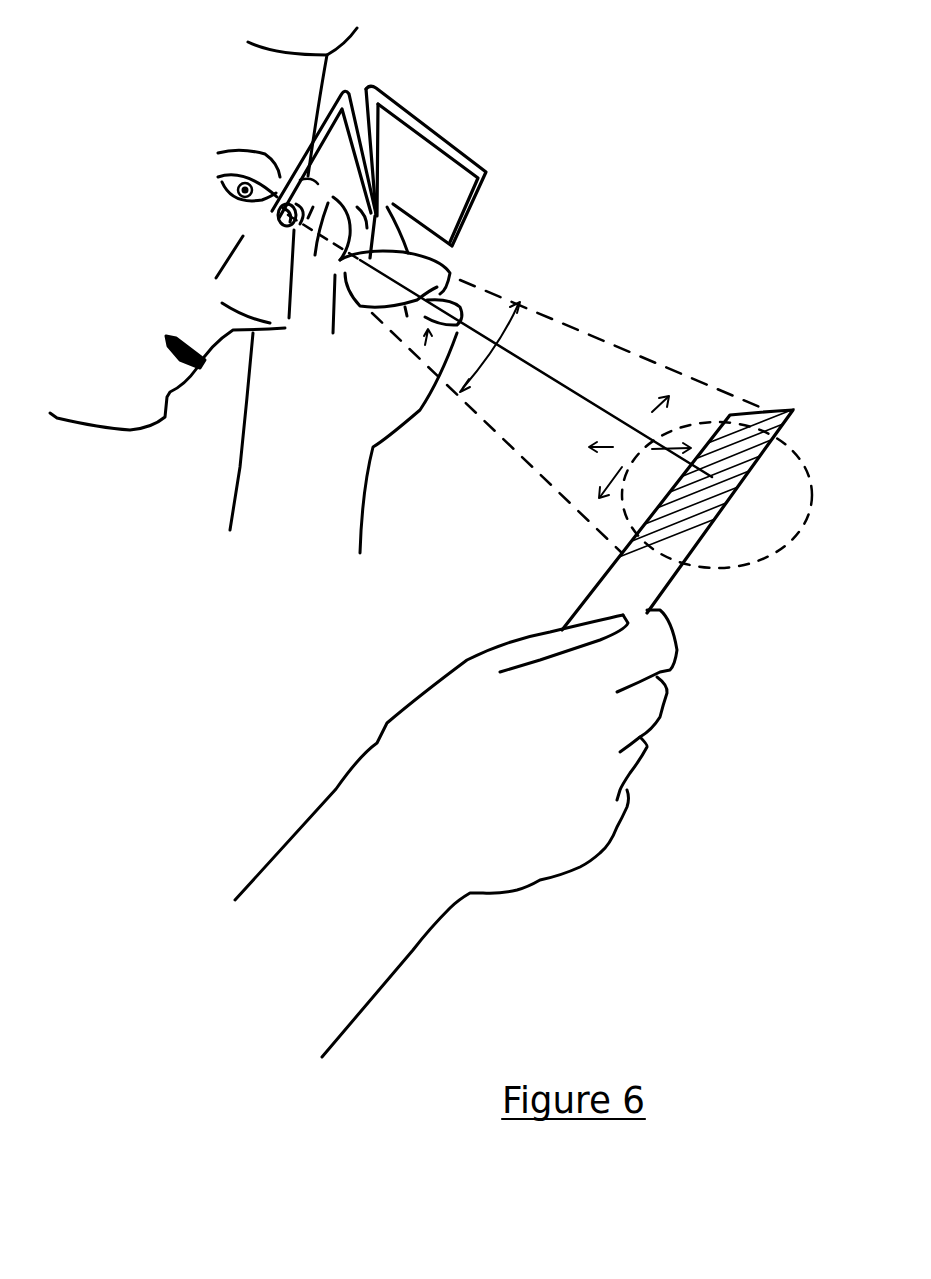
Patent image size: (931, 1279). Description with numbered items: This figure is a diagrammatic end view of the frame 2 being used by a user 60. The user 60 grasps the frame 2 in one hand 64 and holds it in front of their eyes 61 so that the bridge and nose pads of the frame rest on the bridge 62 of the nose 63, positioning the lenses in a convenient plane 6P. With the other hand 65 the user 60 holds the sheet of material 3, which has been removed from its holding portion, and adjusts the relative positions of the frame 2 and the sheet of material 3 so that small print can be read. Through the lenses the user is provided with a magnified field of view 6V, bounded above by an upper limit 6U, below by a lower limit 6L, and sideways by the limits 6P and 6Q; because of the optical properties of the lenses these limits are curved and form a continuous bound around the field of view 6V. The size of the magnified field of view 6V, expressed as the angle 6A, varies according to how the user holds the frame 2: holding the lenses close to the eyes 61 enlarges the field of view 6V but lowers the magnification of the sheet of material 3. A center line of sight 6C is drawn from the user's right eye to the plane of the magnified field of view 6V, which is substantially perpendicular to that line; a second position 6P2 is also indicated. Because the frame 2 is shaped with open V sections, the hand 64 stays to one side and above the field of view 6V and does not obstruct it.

The frame 2 is at (402, 108).
The sheet of material 3 is at (667, 578).
The user 60 is at (101, 458).
The eyes 61 is at (223, 206).
The bridge of the nose 62 is at (267, 228).
The nose 63 is at (266, 302).
The hand 64 is at (323, 404).
The hand 65 is at (437, 808).
The plane 6P is at (308, 184).
The upper limit 6U is at (578, 325).
The lower limit 6L is at (494, 428).
The center line of sight 6C is at (581, 393).
The angle 6A is at (490, 348).
The magnified field of view 6V is at (645, 456).
The second position 6P2 is at (682, 401).
The sideways limit 6Q is at (790, 523).